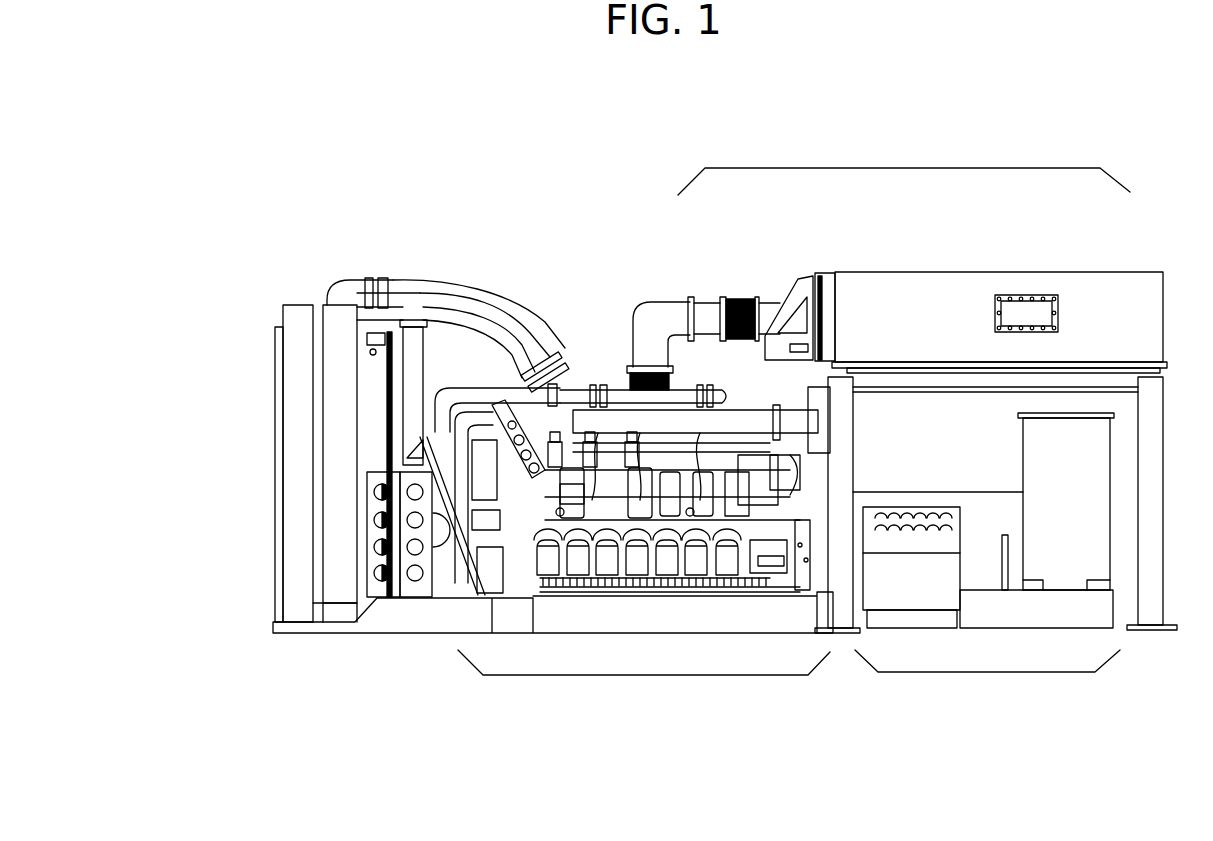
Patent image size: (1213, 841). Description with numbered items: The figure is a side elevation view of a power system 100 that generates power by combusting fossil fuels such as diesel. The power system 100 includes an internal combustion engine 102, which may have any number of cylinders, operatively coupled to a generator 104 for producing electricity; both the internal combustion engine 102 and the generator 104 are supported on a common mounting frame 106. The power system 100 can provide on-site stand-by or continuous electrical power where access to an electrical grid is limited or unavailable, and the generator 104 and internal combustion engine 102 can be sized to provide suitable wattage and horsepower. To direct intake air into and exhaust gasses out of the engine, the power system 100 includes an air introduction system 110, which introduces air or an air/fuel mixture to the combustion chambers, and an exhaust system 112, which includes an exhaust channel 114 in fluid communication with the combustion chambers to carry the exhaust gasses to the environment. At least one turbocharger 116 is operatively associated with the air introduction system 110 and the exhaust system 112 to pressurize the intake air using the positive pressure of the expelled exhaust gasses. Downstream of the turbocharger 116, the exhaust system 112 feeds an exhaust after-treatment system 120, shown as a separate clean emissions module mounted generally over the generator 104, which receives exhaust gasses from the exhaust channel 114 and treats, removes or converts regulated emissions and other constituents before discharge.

The power system 100 is at (596, 201).
The internal combustion engine 102 is at (645, 676).
The generator 104 is at (997, 674).
The common mounting frame 106 is at (395, 620).
The air introduction system 110 is at (752, 387).
The exhaust system 112 is at (918, 166).
The exhaust channel 114 is at (648, 316).
The turbocharger 116 is at (618, 387).
The exhaust after-treatment system 120 is at (866, 259).